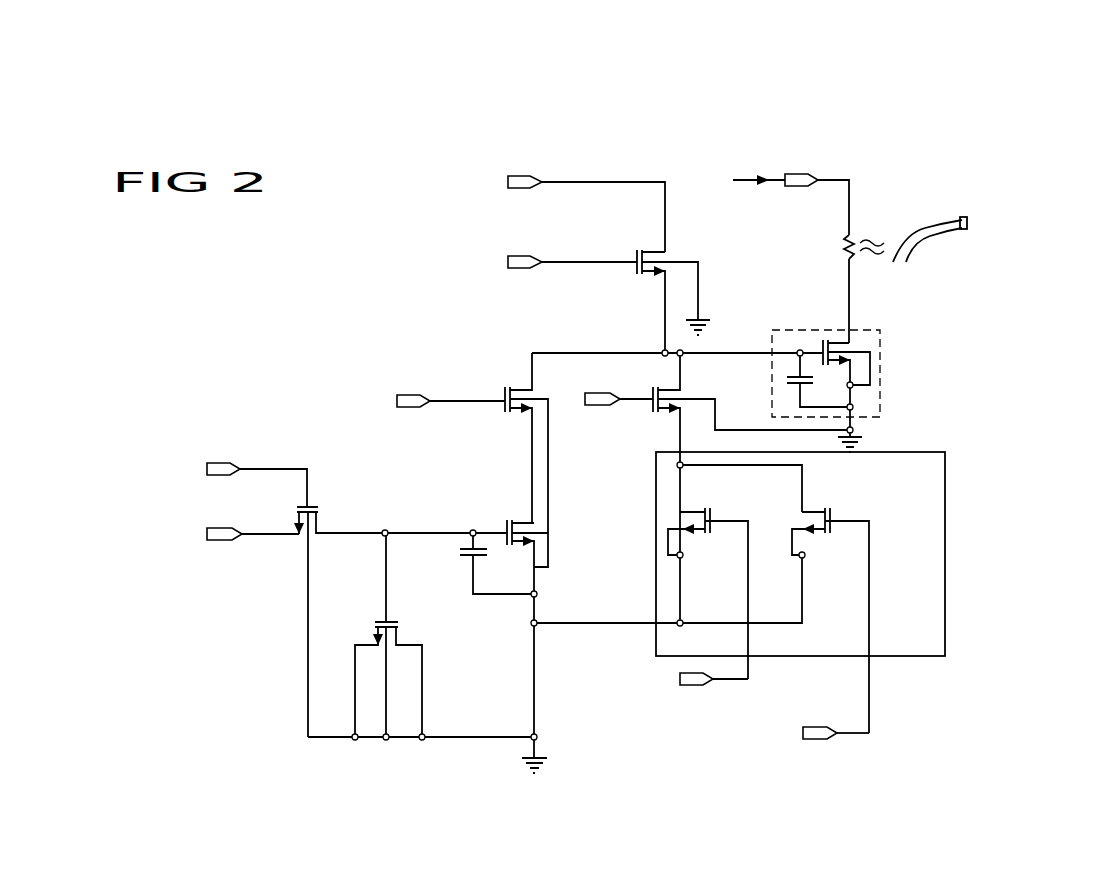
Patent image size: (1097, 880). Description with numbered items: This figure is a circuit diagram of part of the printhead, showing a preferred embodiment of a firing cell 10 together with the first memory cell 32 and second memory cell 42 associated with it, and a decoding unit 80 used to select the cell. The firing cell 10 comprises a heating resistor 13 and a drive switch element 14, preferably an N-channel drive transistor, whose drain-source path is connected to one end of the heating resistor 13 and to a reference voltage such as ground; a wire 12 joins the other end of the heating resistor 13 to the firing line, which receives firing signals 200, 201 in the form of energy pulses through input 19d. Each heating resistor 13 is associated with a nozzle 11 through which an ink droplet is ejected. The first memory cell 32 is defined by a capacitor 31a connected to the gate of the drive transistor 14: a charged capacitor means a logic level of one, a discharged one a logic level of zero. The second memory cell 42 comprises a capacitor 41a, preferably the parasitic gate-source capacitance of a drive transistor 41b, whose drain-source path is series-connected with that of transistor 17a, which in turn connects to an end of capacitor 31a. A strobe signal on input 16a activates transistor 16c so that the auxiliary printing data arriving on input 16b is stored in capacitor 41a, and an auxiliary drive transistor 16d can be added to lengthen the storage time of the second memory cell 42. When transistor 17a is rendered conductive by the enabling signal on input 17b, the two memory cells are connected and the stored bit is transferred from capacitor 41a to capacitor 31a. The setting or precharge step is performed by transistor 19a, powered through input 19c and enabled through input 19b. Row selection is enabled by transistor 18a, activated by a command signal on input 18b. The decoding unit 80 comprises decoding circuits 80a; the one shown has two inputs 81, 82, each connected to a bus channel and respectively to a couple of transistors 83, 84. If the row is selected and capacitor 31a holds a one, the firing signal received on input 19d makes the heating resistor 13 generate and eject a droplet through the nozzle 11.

The firing cell 10 is at (881, 353).
The nozzle 11 is at (945, 222).
The wire 12 is at (849, 318).
The heating resistor 13 is at (852, 237).
The drive switch element 14 is at (822, 345).
The capacitor 31a is at (800, 397).
The first memory cell 32 is at (895, 407).
The firing signal 200 is at (681, 130).
The firing signal 201 is at (758, 177).
The transistor 19a is at (637, 255).
The input 19b is at (519, 257).
The input 19c is at (517, 177).
The input 19d is at (798, 173).
The transistor 17a is at (505, 397).
The input 17b is at (405, 395).
The transistor 18a is at (652, 404).
The input 18b is at (598, 393).
The input 16a is at (219, 463).
The input 16b is at (217, 540).
The transistor 16c is at (301, 506).
The auxiliary drive transistor 16d is at (377, 621).
The capacitor 41a is at (473, 578).
The drive transistor 41b is at (505, 526).
The second memory cell 42 is at (423, 620).
The decoding unit 80 is at (869, 607).
The decoding circuit 80a is at (875, 598).
The input 81 is at (694, 686).
The input 82 is at (813, 740).
The transistor 83 is at (712, 512).
The transistor 84 is at (831, 512).